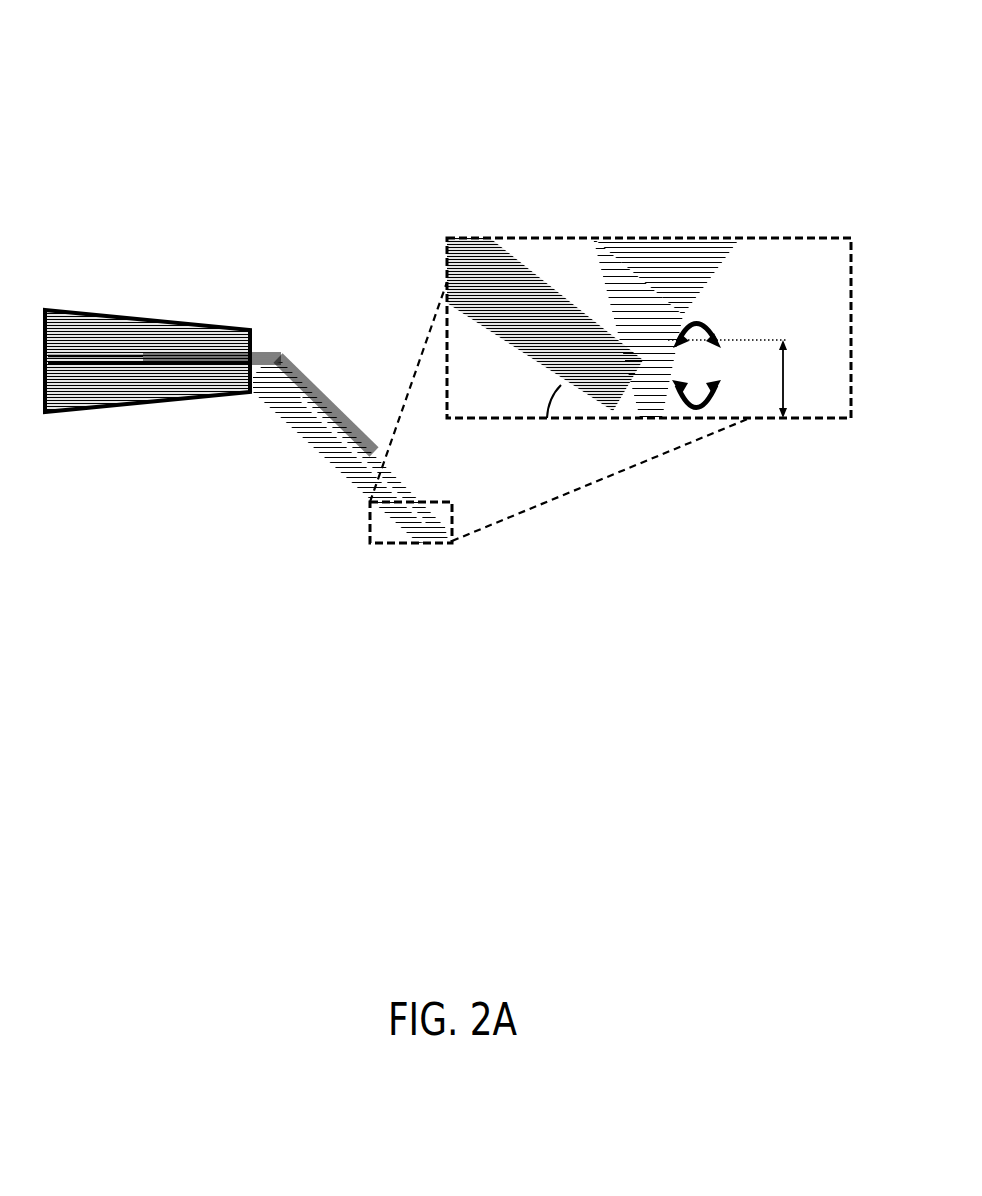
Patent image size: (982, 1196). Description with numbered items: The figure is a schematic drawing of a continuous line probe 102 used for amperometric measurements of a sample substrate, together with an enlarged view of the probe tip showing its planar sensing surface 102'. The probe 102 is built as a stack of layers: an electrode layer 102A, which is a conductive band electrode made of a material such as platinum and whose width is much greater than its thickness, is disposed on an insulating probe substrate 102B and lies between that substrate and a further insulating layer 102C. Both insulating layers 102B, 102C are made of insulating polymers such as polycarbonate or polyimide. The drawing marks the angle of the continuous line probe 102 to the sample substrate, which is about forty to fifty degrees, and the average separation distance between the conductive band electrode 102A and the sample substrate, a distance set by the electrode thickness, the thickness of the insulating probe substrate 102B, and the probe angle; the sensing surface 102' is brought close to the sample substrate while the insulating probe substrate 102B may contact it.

The continuous line probe 102 is at (246, 280).
The sensing surface 102' is at (649, 417).
The electrode layer 102A is at (547, 252).
The insulating probe substrate 102B is at (482, 258).
The insulating layer 102C is at (688, 252).